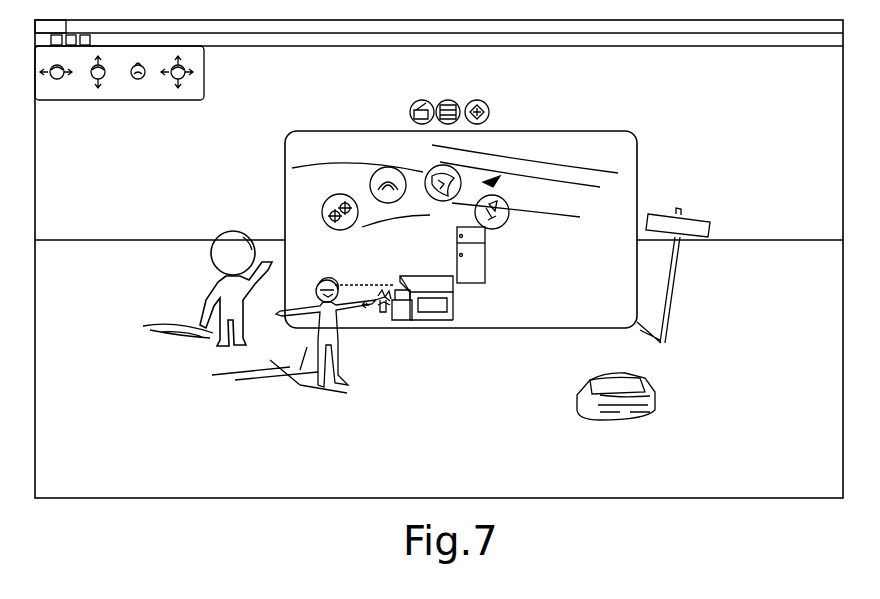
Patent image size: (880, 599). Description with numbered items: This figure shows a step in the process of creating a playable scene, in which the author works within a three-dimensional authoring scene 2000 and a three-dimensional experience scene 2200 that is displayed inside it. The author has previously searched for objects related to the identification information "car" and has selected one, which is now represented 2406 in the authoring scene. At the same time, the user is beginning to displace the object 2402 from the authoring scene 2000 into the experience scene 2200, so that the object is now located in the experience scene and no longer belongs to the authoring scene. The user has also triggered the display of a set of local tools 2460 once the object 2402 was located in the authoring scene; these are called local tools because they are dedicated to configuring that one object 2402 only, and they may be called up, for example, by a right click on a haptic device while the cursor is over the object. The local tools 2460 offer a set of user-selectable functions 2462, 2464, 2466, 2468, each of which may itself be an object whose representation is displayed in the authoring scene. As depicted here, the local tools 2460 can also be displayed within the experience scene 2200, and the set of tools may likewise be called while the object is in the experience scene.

The 3D authoring scene 2000 is at (828, 481).
The 3D experience scene 2200 is at (624, 324).
The object 2402 is at (457, 300).
The representation of the selected object 2406 is at (656, 392).
The set of local tools 2460 is at (490, 180).
The user-selectable function 2462 is at (323, 205).
The user-selectable function 2464 is at (380, 167).
The user-selectable function 2466 is at (443, 201).
The user-selectable function 2468 is at (504, 223).